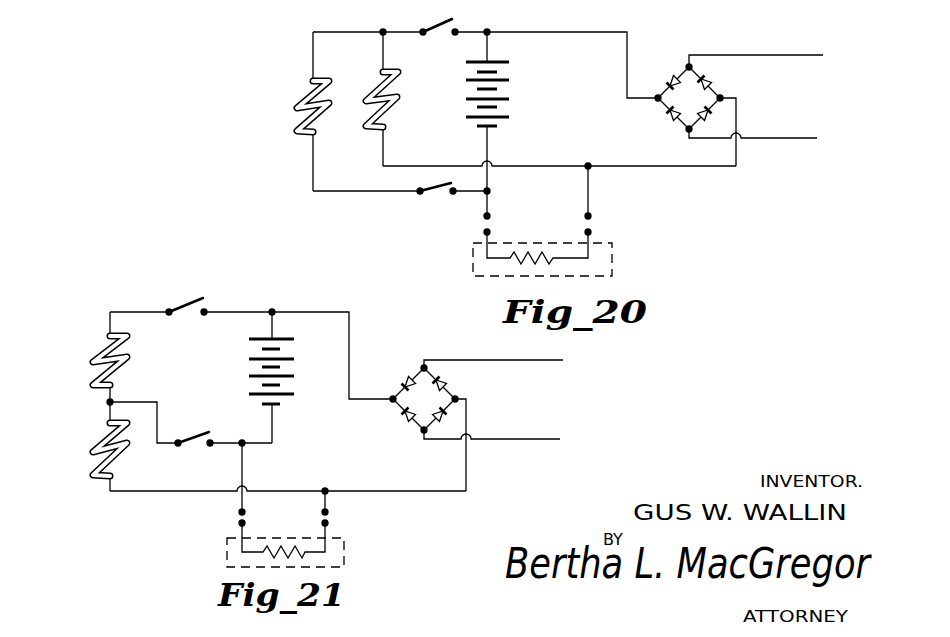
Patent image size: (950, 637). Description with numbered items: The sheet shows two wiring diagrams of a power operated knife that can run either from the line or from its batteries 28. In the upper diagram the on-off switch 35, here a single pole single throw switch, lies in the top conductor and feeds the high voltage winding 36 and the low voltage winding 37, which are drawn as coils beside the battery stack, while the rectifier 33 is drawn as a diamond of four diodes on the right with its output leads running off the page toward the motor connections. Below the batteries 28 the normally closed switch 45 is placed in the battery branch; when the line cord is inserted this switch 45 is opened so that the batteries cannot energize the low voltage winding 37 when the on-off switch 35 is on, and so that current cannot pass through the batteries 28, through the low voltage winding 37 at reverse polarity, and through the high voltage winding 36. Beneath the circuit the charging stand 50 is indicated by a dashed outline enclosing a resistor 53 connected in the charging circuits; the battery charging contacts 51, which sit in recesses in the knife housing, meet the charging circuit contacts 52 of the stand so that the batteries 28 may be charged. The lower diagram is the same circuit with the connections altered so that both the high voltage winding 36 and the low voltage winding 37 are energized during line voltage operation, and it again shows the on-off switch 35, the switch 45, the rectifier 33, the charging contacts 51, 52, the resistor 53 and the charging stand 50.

In FIG. 20, the batteries 28 is at (507, 98).
In FIG. 21, the batteries 28 is at (252, 375).
In FIG. 20, the rectifier 33 is at (676, 72).
In FIG. 21, the rectifier 33 is at (418, 372).
In FIG. 20, the on-off switch 35 is at (431, 25).
In FIG. 21, the on-off switch 35 is at (192, 300).
In FIG. 20, the high voltage winding 36 is at (300, 98).
In FIG. 21, the high voltage winding 36 is at (96, 356).
In FIG. 20, the low voltage winding 37 is at (396, 103).
In FIG. 21, the low voltage winding 37 is at (94, 446).
In FIG. 20, the switch 45 is at (440, 195).
In FIG. 21, the switch 45 is at (199, 434).
In FIG. 20, the charging stand 50 is at (612, 267).
In FIG. 21, the charging stand 50 is at (344, 557).
In FIG. 20, the battery charging contacts 51 is at (490, 215).
In FIG. 21, the battery charging contacts 51 is at (240, 512).
In FIG. 20, the charging circuit contacts 52 is at (485, 233).
In FIG. 21, the charging circuit contacts 52 is at (240, 524).
In FIG. 20, the resistor 53 is at (538, 256).
In FIG. 21, the resistor 53 is at (276, 552).